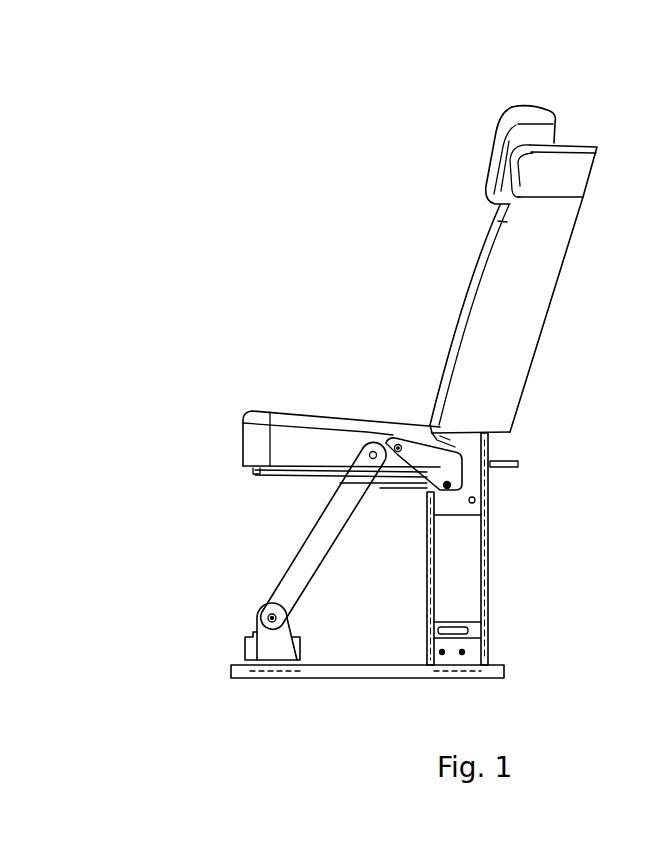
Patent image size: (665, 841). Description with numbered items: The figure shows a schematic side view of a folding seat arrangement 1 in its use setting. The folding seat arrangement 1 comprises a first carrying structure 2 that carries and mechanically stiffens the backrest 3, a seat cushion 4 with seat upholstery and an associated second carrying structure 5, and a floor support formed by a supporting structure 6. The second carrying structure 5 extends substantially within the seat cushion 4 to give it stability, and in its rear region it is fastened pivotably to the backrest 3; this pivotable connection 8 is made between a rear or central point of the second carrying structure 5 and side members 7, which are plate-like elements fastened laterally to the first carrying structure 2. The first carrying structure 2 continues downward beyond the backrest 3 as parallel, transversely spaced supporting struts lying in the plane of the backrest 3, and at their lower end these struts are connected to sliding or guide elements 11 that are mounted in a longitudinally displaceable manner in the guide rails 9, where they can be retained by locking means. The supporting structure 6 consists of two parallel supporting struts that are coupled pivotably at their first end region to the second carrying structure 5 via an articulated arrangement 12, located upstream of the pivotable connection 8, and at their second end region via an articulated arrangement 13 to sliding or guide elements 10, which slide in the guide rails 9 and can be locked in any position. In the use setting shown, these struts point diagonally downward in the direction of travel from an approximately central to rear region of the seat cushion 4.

The folding seat arrangement 1 is at (240, 196).
The first carrying structure 2 is at (488, 458).
The backrest 3 is at (530, 282).
The seat cushion 4 is at (283, 445).
The second carrying structure 5 is at (262, 470).
The supporting structure 6 is at (338, 508).
The side members 7 is at (455, 479).
The pivotable connection 8 is at (395, 437).
The guide rails 9 is at (335, 675).
The sliding or guide elements 10 is at (262, 652).
The sliding or guide elements 11 is at (457, 670).
The articulated arrangement 12 is at (372, 440).
The articulated arrangement 13 is at (283, 614).